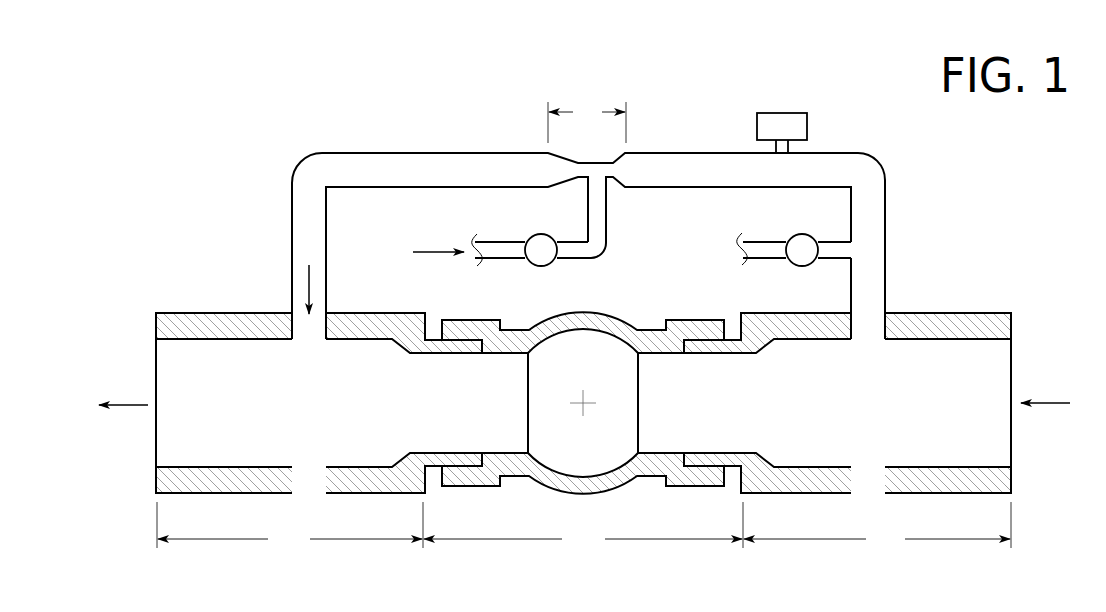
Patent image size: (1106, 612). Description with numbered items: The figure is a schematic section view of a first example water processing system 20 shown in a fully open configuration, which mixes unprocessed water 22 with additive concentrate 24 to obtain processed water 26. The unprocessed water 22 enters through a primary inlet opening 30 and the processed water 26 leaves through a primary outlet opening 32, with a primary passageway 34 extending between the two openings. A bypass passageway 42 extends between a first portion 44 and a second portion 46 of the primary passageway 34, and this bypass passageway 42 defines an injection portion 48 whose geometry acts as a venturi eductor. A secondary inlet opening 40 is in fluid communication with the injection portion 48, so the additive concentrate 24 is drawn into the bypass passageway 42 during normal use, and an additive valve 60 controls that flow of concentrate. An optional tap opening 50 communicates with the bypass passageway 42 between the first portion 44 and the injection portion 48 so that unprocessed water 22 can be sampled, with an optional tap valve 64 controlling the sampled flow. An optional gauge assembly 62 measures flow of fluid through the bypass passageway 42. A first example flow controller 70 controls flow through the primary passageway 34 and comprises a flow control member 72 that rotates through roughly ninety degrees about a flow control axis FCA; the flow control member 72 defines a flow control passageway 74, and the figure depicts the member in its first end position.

The water processing system 20 is at (945, 182).
The unprocessed water 22 is at (1057, 404).
The additive concentrate 24 is at (428, 250).
The processed water 26 is at (125, 406).
The primary inlet opening 30 is at (1013, 378).
The primary outlet opening 32 is at (155, 377).
The primary passageway 34 is at (372, 410).
The secondary inlet opening 40 is at (478, 252).
The bypass passageway 42 is at (673, 167).
The first portion of the primary passageway 44 is at (877, 527).
The second portion of the primary passageway 46 is at (290, 527).
The injection portion 48 is at (587, 121).
The tap opening 50 is at (737, 252).
The additive valve 60 is at (552, 263).
The gauge assembly 62 is at (800, 127).
The tap valve 64 is at (795, 263).
The flow controller 70 is at (583, 527).
The flow control member 72 is at (622, 387).
The flow control passageway 74 is at (570, 391).
The flow control axis FCA is at (583, 404).